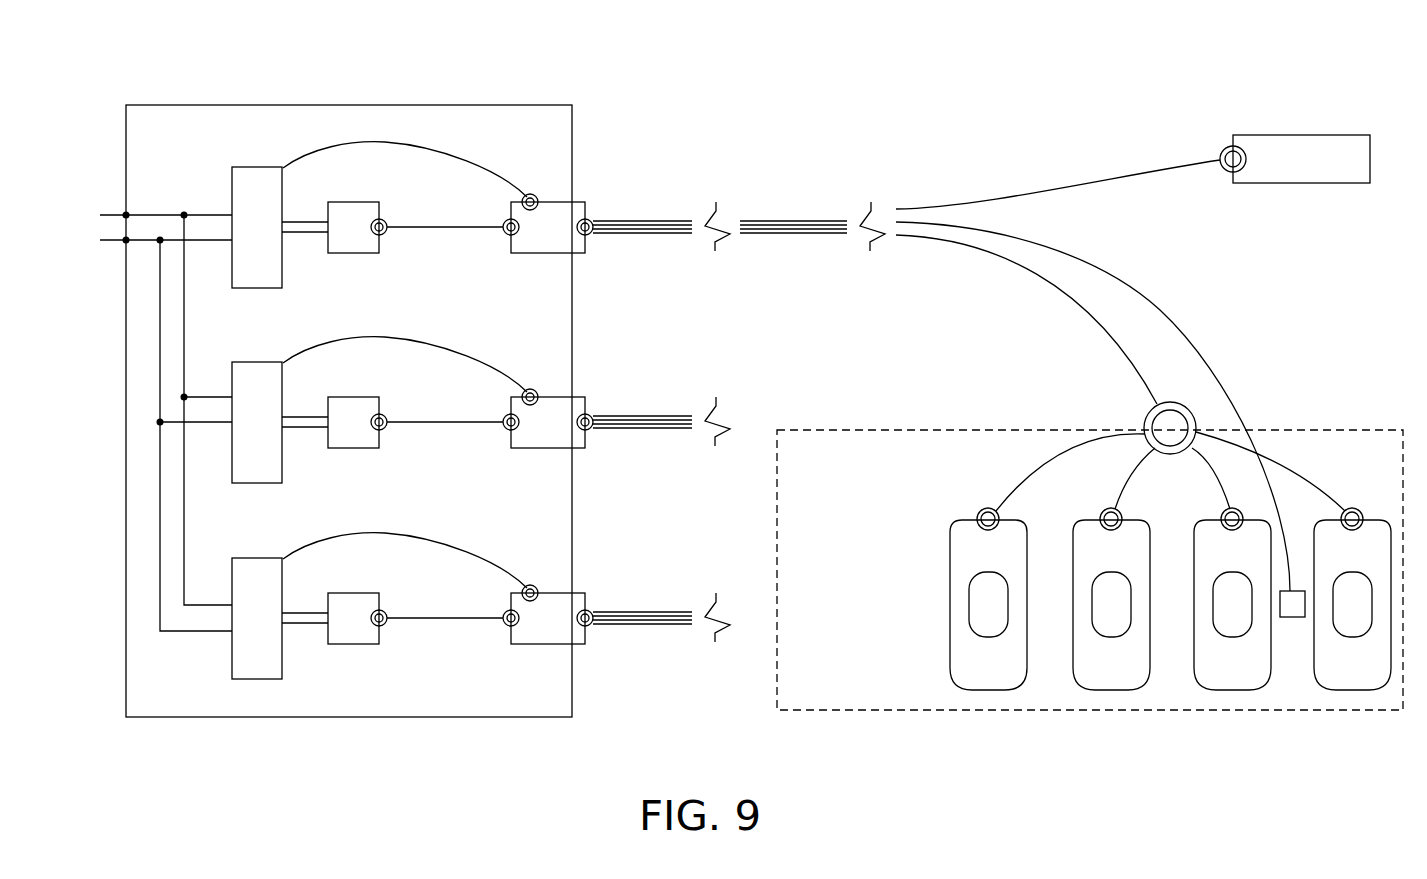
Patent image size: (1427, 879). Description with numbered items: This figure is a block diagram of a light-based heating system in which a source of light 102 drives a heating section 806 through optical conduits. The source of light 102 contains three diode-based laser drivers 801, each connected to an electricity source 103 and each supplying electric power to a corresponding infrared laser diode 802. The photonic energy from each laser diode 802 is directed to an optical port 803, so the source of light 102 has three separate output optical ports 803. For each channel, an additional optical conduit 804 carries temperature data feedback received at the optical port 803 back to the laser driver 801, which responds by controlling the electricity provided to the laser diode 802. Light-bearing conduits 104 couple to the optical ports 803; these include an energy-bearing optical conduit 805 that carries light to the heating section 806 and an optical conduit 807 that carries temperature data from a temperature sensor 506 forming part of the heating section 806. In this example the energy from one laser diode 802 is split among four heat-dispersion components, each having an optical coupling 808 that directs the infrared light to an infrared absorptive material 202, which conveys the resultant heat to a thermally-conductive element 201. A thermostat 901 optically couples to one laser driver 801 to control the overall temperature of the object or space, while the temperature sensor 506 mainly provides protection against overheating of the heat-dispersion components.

The source of light 102 is at (228, 104).
The electricity source 103 is at (43, 241).
The light-bearing conduits 104 is at (660, 234).
The thermally-conductive element 201 is at (952, 637).
The infrared absorptive material 202 is at (969, 601).
The temperature sensor 506 is at (1292, 618).
The laser driver 801 is at (232, 182).
The infrared laser diode 802 is at (352, 253).
The optical port 803 is at (537, 253).
The optical conduit 804 is at (369, 141).
The optical conduit 805 is at (1058, 282).
The heating section 806 is at (890, 430).
The optical conduit 807 is at (1130, 297).
The optical coupling 808 is at (988, 507).
The thermostat 901 is at (1312, 184).